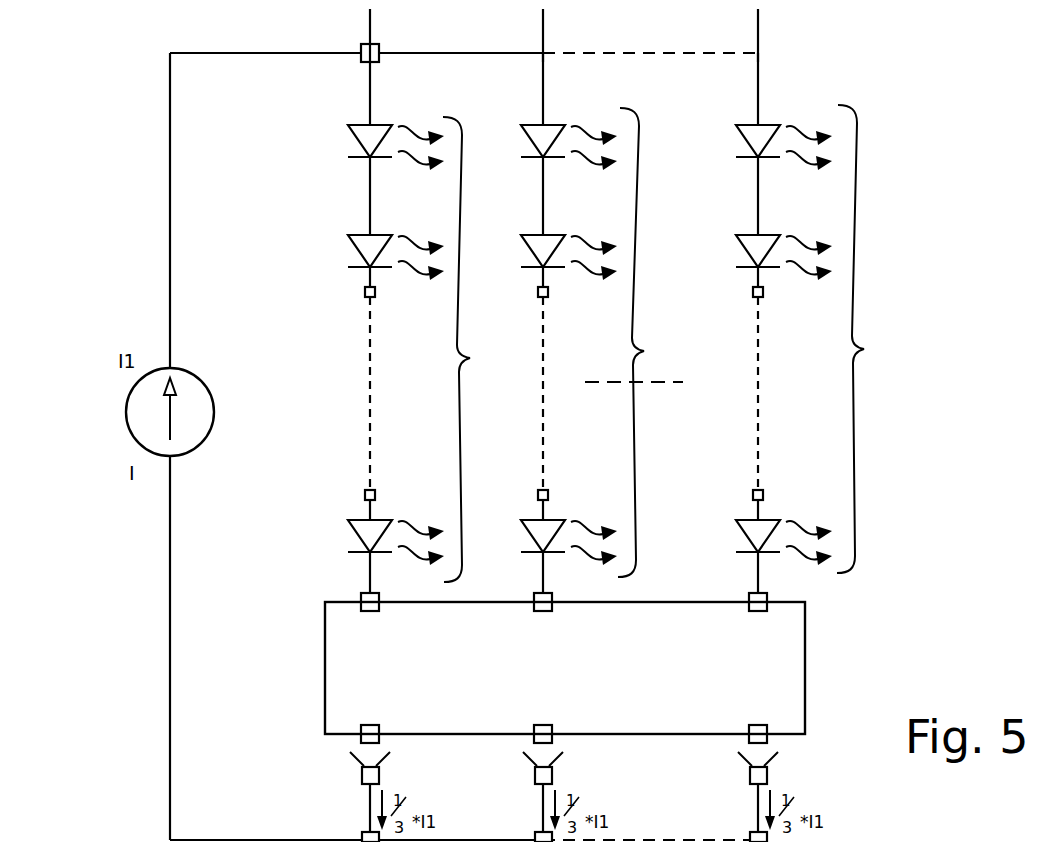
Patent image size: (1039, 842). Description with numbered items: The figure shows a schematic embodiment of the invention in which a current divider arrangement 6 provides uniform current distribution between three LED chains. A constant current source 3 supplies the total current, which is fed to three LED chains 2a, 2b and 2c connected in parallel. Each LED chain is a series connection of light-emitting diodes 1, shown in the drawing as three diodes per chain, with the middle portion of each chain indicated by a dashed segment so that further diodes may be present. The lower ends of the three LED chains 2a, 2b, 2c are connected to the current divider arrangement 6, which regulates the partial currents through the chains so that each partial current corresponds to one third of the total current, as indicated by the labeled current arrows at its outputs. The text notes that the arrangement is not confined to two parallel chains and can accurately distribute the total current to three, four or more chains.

The light-emitting diode 1 is at (328, 547).
The LED chain 2a is at (473, 349).
The LED chain 2b is at (634, 342).
The LED chain 2c is at (866, 339).
The constant current source 3 is at (199, 420).
The current divider arrangement 6 is at (783, 658).